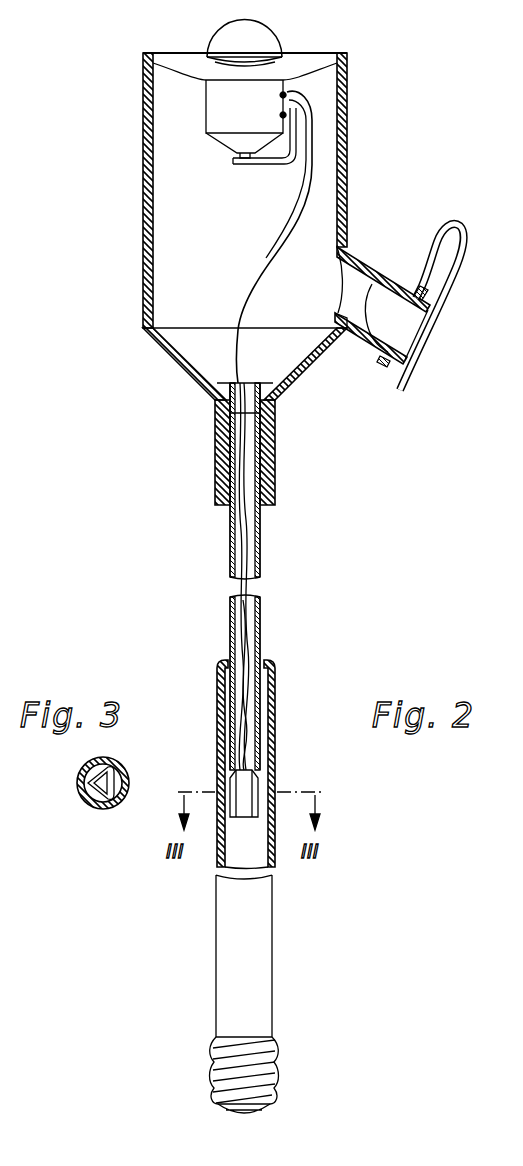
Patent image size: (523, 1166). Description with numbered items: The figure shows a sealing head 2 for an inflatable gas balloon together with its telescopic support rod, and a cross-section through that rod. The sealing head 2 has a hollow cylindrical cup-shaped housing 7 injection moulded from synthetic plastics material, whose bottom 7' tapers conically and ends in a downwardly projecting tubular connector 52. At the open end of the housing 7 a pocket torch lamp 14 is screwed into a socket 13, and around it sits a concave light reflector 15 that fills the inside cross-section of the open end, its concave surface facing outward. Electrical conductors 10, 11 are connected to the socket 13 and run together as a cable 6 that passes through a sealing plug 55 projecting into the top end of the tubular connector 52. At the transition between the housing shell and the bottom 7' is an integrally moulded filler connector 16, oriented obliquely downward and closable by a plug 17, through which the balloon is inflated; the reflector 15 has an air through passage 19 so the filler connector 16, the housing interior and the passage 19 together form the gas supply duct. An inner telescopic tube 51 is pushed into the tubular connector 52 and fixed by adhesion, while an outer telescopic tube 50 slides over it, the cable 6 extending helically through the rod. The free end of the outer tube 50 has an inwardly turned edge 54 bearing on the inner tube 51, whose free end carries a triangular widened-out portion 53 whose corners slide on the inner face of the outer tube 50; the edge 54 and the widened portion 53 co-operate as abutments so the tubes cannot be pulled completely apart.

In FIG. 2, the sealing head 2 is at (353, 133).
In FIG. 2, the cable 6 is at (242, 627).
In FIG. 2, the housing 7 is at (221, 190).
In FIG. 2, the housing bottom 7' is at (250, 371).
In FIG. 2, the electrical conductor 10 is at (300, 105).
In FIG. 2, the electrical conductor 11 is at (302, 140).
In FIG. 2, the socket 13 is at (224, 122).
In FIG. 2, the pocket torch lamp 14 is at (268, 33).
In FIG. 2, the concave light reflector 15 is at (320, 58).
In FIG. 2, the filler connector 16 is at (373, 263).
In FIG. 2, the plug 17 is at (410, 328).
In FIG. 2, the air through passage 19 is at (225, 63).
In FIG. 2, the outer telescopic tube 50 is at (260, 912).
In FIG. 3, the outer telescopic tube 50 is at (85, 803).
In FIG. 2, the inner telescopic tube 51 is at (262, 552).
In FIG. 2, the tubular connector 52 is at (267, 453).
In FIG. 2, the widened-out portion 53 is at (260, 778).
In FIG. 3, the widened-out portion 53 is at (120, 780).
In FIG. 2, the inwardly turned edge 54 is at (270, 658).
In FIG. 2, the sealing plug 55 is at (237, 392).